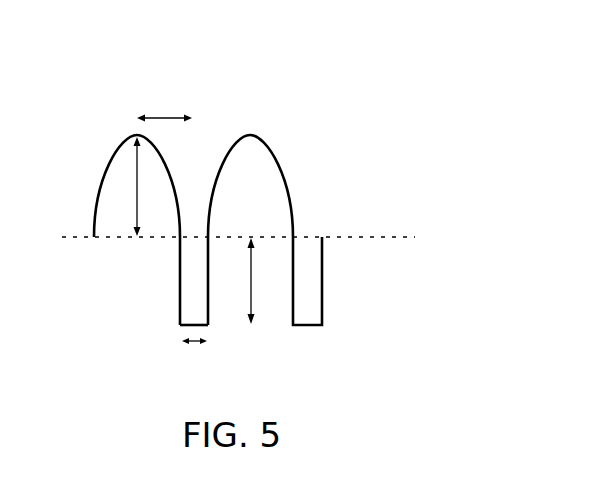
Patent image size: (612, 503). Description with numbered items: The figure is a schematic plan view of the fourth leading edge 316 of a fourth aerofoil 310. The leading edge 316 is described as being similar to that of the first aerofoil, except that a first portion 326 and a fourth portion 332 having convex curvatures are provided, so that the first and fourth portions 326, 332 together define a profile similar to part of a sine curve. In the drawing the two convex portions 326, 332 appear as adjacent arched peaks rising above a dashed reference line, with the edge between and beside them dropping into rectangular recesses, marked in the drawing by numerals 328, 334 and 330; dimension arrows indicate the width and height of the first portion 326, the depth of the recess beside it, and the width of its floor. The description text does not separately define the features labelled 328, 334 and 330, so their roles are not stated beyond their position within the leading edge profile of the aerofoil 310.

The fourth leading edge 316 is at (288, 67).
The first portion 326 is at (172, 180).
The fourth portion 332 is at (222, 178).
The channel side wall 328 is at (178, 283).
The channel bottom 334 is at (176, 328).
The channel depth 330 is at (213, 292).
The fourth aerofoil 310 is at (272, 327).